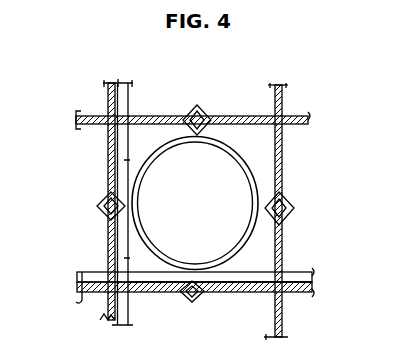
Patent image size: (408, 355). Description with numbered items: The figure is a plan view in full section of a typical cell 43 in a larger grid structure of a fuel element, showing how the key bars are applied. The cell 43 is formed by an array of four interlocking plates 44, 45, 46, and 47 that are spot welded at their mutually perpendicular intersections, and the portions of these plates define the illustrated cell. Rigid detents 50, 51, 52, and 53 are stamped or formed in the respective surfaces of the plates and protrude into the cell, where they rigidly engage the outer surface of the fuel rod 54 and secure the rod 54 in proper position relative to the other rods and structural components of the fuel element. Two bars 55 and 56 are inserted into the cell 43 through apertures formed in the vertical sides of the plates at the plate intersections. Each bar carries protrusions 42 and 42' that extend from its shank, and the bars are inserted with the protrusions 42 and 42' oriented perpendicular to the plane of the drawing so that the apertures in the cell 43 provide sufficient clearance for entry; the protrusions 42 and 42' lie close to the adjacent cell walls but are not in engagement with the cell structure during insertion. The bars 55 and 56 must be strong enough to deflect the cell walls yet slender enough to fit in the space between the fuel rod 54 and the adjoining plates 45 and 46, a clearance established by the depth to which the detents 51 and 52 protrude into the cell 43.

The cell 43 is at (293, 104).
The interlocking plate 44 is at (148, 116).
The interlocking plate 45 is at (108, 160).
The protrusion 42 is at (89, 204).
The protrusion 42' is at (220, 308).
The interlocking plate 46 is at (142, 294).
The interlocking plate 47 is at (282, 270).
The rigid detent 50 is at (210, 124).
The rigid detent 51 is at (131, 194).
The rigid detent 52 is at (192, 268).
The rigid detent 53 is at (283, 226).
The fuel rod 54 is at (282, 159).
The bar 55 is at (127, 82).
The bar 56 is at (312, 288).